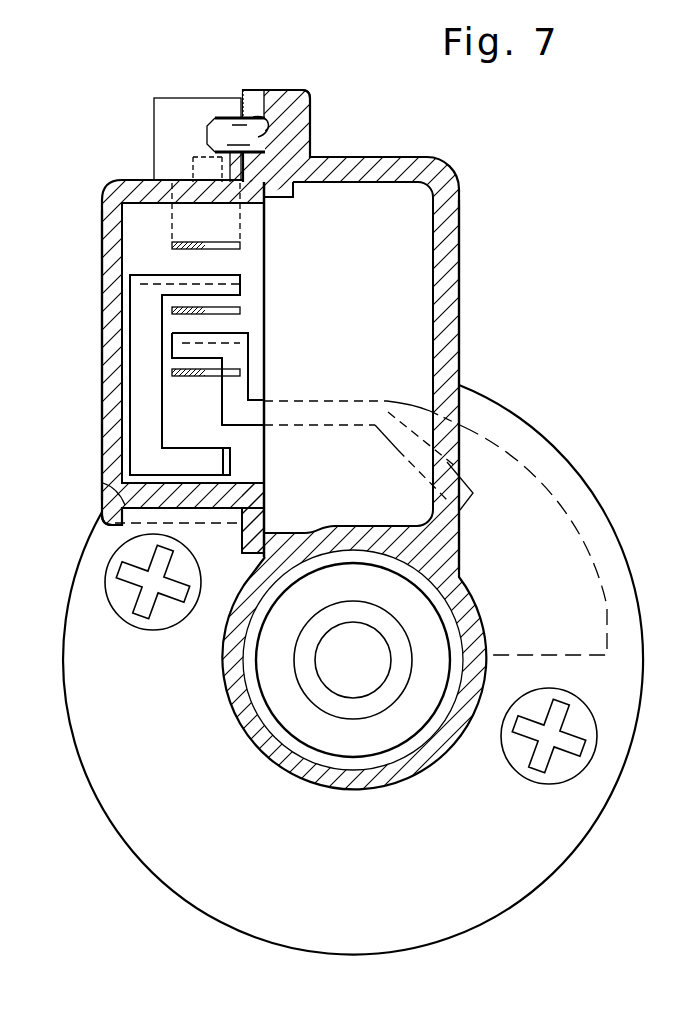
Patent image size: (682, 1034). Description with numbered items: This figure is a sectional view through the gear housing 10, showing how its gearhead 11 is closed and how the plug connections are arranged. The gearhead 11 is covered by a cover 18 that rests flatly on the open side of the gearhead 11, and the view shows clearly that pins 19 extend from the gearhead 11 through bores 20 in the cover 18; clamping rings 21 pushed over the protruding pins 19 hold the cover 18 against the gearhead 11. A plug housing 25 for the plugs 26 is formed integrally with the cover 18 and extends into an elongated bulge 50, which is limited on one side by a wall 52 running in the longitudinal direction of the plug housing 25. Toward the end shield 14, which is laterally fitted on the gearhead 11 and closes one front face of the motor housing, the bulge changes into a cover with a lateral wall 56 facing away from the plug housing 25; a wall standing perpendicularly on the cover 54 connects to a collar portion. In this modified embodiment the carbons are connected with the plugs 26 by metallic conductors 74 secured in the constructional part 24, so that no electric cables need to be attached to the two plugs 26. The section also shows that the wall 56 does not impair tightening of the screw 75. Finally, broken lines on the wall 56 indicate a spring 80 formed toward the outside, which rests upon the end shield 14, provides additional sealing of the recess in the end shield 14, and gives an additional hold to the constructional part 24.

The gear housing 10 is at (466, 182).
The gearhead 11 is at (450, 287).
The end shield 14 is at (479, 902).
The cover 18 is at (256, 104).
The pins 19 is at (212, 122).
The bores 20 is at (292, 100).
The clamping rings 21 is at (240, 115).
The constructional part 24 is at (94, 486).
The plug housing 25 is at (167, 135).
The plugs 26 is at (170, 250).
The bulge 50 is at (96, 427).
The wall 52 is at (166, 186).
The cover 54 is at (108, 308).
The lateral wall 56 is at (101, 526).
The metallic conductors 74 is at (140, 375).
The screw 75 is at (165, 625).
The spring 80 is at (226, 522).